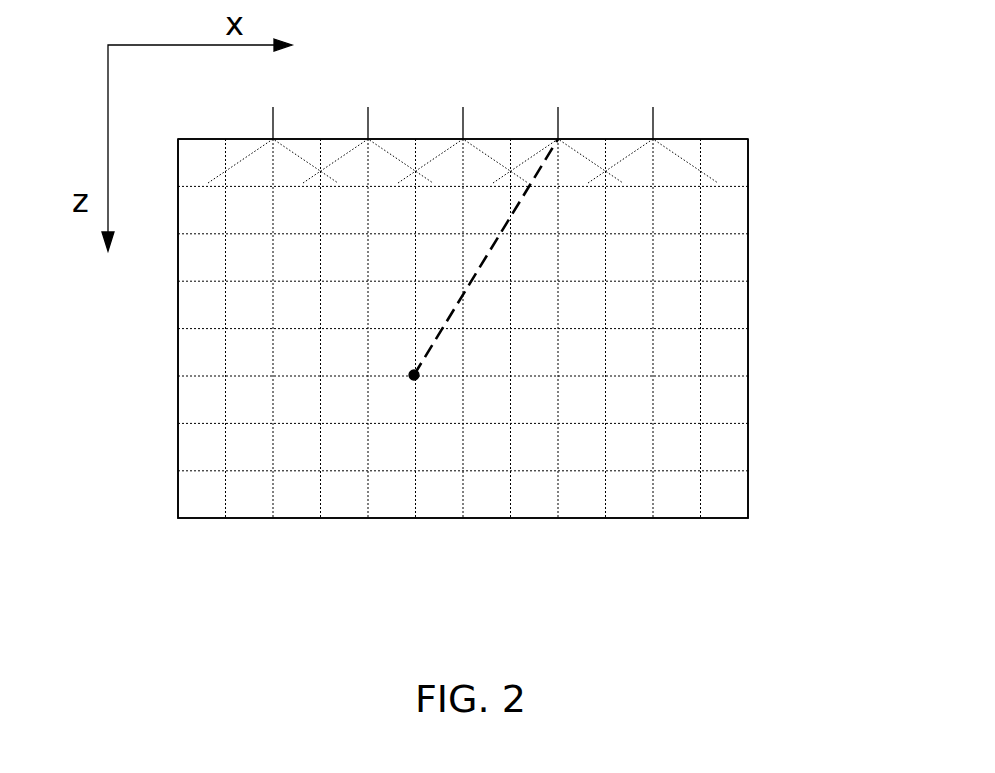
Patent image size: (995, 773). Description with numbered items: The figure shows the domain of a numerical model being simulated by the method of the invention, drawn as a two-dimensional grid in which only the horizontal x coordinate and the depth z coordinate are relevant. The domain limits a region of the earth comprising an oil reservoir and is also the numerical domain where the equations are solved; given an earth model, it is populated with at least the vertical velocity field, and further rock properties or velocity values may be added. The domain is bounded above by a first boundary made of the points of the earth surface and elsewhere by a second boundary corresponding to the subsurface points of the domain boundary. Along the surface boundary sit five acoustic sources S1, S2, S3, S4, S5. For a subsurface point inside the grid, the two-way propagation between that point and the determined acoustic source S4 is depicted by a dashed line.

The acoustic source S1 is at (273, 143).
The acoustic source S2 is at (368, 143).
The acoustic source S3 is at (463, 143).
The acoustic source S4 is at (558, 143).
The acoustic source S5 is at (653, 143).